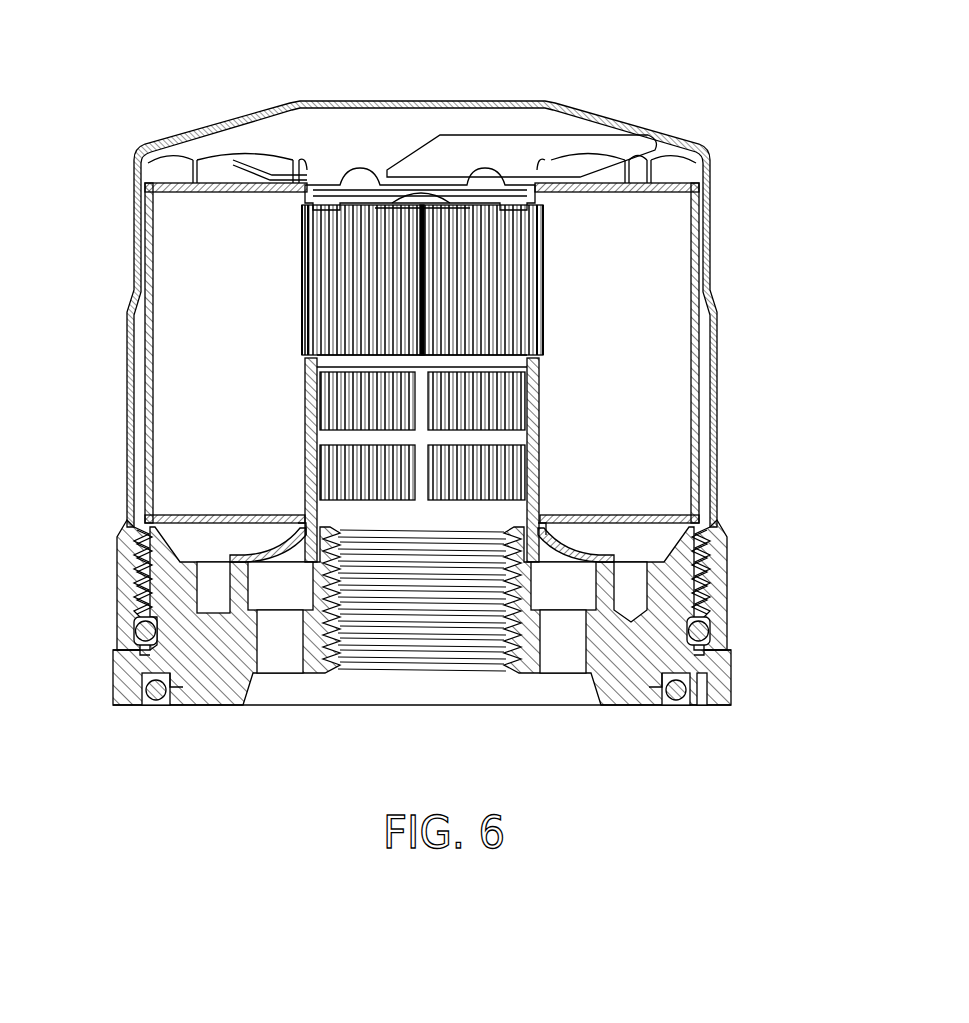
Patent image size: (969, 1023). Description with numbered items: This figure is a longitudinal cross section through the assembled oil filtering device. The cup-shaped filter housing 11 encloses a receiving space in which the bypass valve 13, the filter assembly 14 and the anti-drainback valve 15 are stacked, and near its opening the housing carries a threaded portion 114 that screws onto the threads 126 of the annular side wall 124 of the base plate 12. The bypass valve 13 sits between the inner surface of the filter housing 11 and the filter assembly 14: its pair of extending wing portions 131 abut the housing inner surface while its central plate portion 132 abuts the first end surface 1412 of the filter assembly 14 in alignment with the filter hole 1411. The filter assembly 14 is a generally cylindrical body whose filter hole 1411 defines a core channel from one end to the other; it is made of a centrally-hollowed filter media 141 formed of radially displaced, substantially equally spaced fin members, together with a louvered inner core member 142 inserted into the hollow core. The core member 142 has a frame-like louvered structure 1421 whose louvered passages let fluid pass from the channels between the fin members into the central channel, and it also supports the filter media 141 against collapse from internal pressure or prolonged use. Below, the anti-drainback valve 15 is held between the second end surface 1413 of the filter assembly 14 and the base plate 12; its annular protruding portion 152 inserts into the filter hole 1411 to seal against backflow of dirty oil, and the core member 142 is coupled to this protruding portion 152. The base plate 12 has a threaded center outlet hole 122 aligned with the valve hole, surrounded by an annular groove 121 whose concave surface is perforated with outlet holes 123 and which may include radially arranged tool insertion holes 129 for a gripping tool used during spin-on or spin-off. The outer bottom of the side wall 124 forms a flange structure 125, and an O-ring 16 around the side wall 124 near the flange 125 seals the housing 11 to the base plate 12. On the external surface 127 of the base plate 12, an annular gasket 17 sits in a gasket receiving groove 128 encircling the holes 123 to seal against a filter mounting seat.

The filter housing 11 is at (228, 118).
The base plate 12 is at (733, 663).
The bypass valve 13 is at (360, 193).
The filter assembly 14 is at (485, 353).
The anti-drainback valve 15 is at (250, 553).
The O-ring 16 is at (148, 633).
The annular gasket 17 is at (688, 706).
The threaded portion 114 is at (133, 592).
The annular groove 121 is at (190, 547).
The threaded center outlet hole 122 is at (463, 650).
The outlet holes 123 is at (278, 657).
The annular side wall 124 is at (152, 633).
The flange structure 125 is at (137, 667).
The threads 126 is at (134, 556).
The external surface 127 is at (718, 702).
The gasket receiving groove 128 is at (707, 706).
The tool insertion holes 129 is at (640, 584).
The extending wing portions 131 is at (527, 134).
The central plate portion 132 is at (368, 210).
The filter media 141 is at (665, 272).
The louvered inner core member 142 is at (535, 502).
The annular protruding portion 152 is at (300, 518).
The filter hole 1411 is at (518, 242).
The first end surface 1412 is at (628, 180).
The second end surface 1413 is at (704, 540).
The frame-like louvered structure 1421 is at (516, 366).